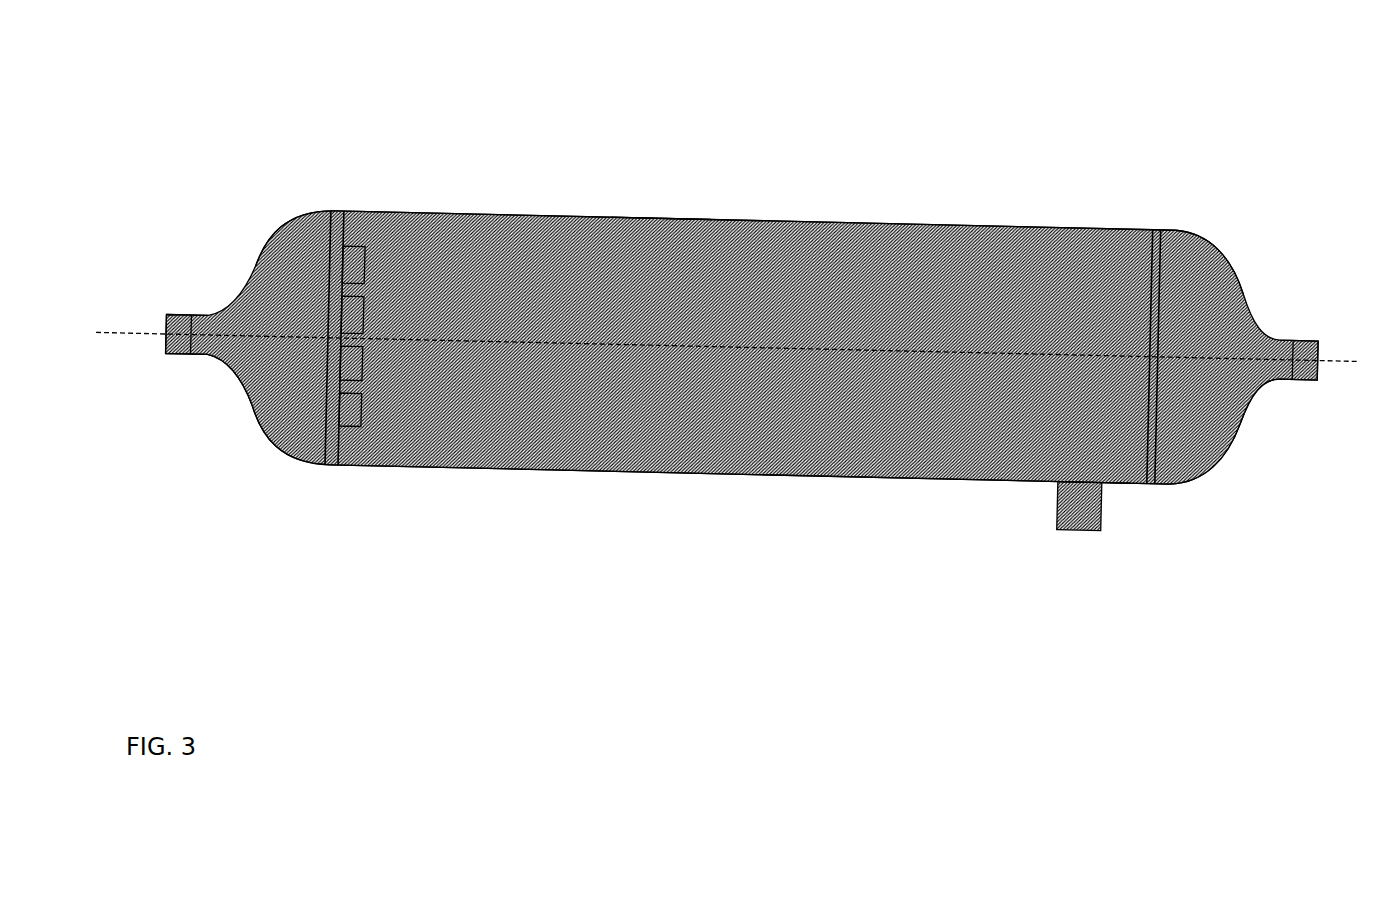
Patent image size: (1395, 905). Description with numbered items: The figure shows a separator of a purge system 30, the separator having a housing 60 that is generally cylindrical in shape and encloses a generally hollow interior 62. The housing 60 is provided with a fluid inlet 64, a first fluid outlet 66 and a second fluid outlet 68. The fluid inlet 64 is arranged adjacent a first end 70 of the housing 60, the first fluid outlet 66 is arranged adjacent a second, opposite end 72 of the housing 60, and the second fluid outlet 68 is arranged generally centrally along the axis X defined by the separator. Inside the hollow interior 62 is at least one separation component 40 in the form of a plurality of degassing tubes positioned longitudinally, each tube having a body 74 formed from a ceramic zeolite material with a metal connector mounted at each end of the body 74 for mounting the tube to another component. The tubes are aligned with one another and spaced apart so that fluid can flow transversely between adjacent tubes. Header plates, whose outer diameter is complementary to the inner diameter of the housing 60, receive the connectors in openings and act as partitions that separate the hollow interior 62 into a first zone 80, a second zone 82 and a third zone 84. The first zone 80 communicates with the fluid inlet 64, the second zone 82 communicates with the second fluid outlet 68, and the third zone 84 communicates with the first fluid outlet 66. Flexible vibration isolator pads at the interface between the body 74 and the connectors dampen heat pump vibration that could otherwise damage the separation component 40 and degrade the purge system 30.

The purge system 30 is at (136, 117).
The separation component 40 is at (478, 205).
The housing 60 is at (1016, 218).
The hollow interior 62 is at (400, 203).
The fluid inlet 64 is at (157, 312).
The first fluid outlet 66 is at (1312, 345).
The second fluid outlet 68 is at (1076, 525).
The first end 70 is at (183, 350).
The second end 72 is at (1272, 376).
The body 74 is at (746, 213).
The first zone 80 is at (262, 435).
The second zone 82 is at (695, 466).
The third zone 84 is at (1185, 470).